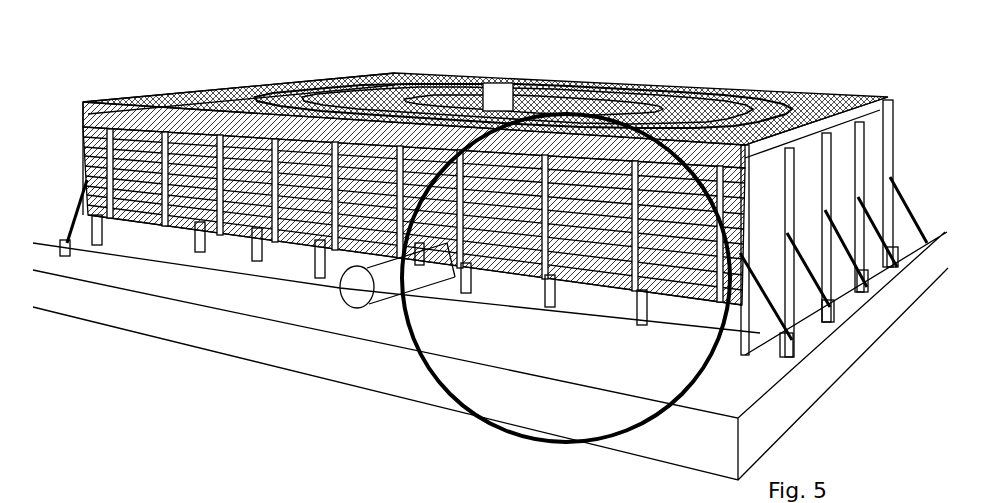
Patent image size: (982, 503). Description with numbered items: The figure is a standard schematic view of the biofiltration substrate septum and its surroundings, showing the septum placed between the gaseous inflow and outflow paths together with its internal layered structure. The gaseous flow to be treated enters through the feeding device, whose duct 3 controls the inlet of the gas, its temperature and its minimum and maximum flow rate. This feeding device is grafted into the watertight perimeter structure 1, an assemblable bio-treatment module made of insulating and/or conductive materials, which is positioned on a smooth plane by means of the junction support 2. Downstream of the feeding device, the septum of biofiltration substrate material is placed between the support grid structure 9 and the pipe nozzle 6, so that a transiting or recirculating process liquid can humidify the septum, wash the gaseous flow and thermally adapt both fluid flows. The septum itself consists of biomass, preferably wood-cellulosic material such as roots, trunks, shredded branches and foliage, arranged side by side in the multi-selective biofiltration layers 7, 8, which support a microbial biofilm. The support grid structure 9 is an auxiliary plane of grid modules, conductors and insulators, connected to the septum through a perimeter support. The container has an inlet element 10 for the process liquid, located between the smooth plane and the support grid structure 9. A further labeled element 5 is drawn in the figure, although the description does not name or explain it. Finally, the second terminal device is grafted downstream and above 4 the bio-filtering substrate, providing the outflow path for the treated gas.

The watertight perimeter structure 1 is at (770, 250).
The junction support 2 is at (850, 189).
The duct 3 is at (358, 316).
The downstream upper grafting position 4 is at (500, 76).
The foundation slab 5 is at (234, 301).
The pipe nozzle 6 is at (200, 98).
The multi-selective biofiltration layer 7 is at (95, 128).
The multi-selective biofiltration layer 8 is at (103, 173).
The support grid structure 9 is at (608, 294).
The inlet element 10 is at (172, 245).